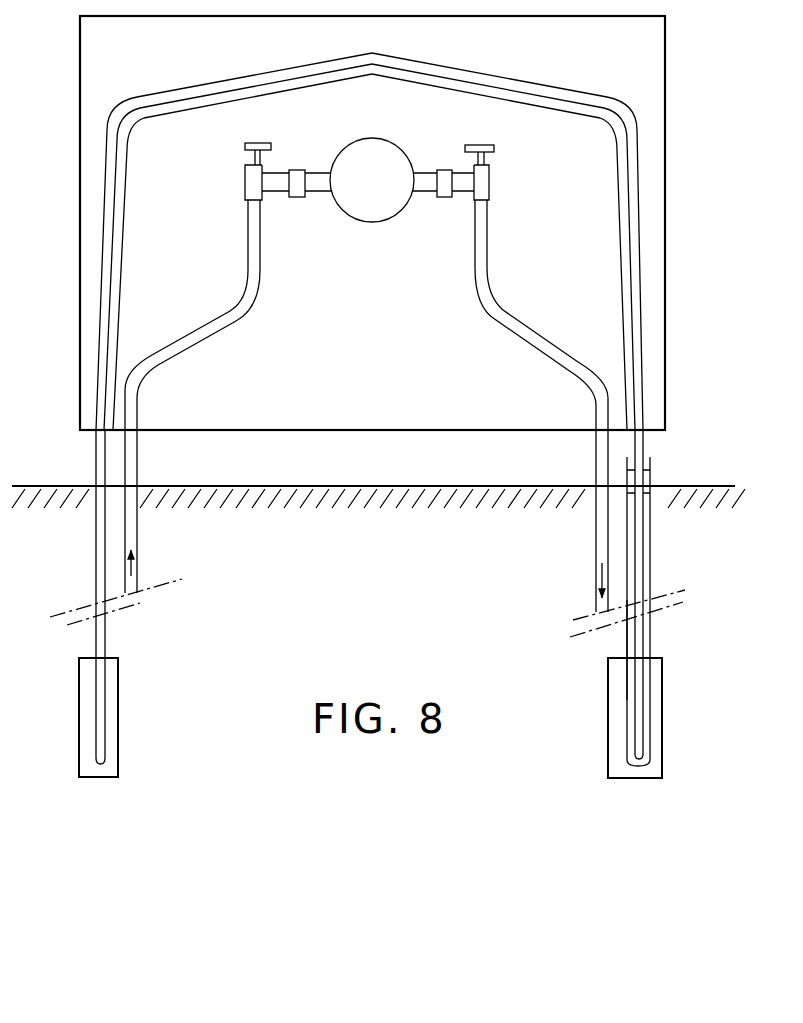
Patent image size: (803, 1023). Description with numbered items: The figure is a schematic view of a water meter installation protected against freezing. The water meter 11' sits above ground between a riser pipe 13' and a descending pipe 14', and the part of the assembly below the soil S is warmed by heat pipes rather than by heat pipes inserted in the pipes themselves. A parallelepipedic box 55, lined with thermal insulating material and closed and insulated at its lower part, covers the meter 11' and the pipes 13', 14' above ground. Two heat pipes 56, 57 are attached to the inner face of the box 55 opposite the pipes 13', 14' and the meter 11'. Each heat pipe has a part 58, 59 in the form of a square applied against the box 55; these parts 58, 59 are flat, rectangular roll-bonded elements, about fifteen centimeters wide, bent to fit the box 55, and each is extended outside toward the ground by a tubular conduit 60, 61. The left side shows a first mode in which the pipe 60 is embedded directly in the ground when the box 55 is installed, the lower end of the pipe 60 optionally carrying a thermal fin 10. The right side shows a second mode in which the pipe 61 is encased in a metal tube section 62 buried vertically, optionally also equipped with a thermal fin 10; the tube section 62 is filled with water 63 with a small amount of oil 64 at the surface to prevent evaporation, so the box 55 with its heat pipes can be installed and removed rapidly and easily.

The parallelepipedic box 55 is at (79, 58).
The heat pipe 56 is at (92, 459).
The heat pipe 57 is at (646, 440).
The square-shaped part of heat pipe 58 is at (125, 222).
The square-shaped part of heat pipe 59 is at (457, 95).
The tubular conduit 60 is at (102, 571).
The tubular conduit 61 is at (638, 643).
The metal tube section 62 is at (624, 638).
The water 63 is at (651, 573).
The oil 64 is at (652, 480).
The thermal fin 10 is at (118, 713).
The water meter 11' is at (369, 200).
The riser pipe 13' is at (192, 396).
The descending pipe 14' is at (541, 406).
The soil S is at (354, 485).